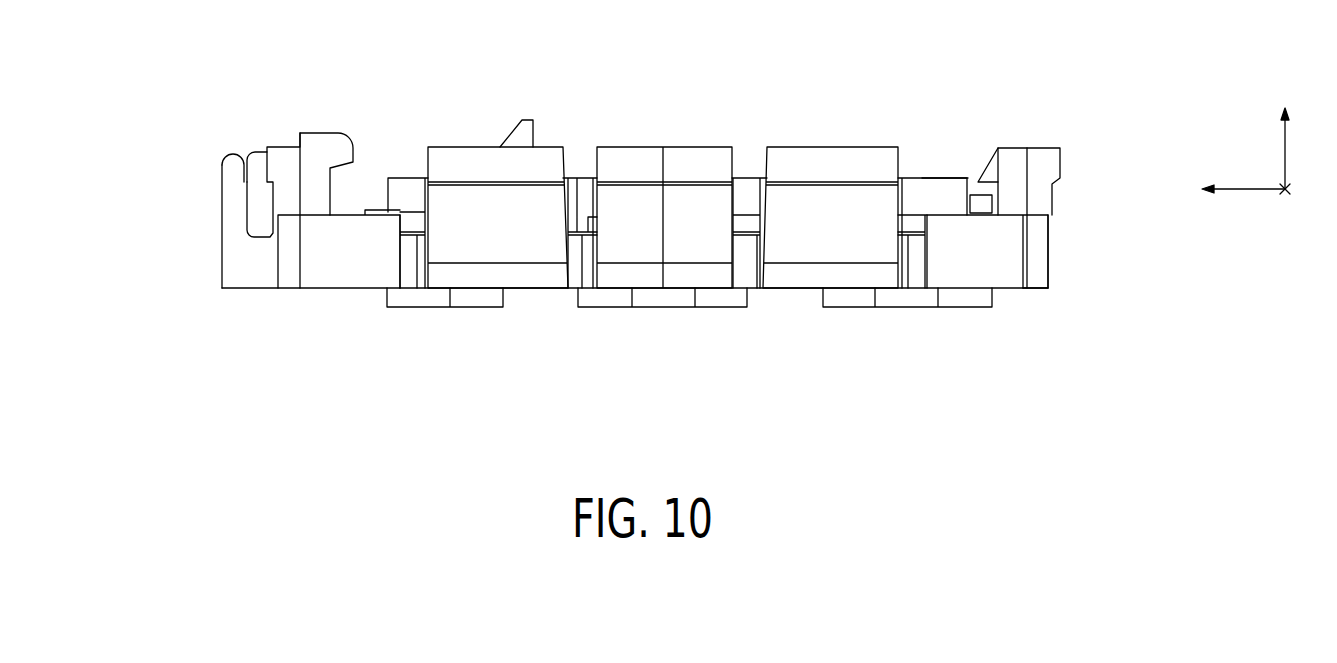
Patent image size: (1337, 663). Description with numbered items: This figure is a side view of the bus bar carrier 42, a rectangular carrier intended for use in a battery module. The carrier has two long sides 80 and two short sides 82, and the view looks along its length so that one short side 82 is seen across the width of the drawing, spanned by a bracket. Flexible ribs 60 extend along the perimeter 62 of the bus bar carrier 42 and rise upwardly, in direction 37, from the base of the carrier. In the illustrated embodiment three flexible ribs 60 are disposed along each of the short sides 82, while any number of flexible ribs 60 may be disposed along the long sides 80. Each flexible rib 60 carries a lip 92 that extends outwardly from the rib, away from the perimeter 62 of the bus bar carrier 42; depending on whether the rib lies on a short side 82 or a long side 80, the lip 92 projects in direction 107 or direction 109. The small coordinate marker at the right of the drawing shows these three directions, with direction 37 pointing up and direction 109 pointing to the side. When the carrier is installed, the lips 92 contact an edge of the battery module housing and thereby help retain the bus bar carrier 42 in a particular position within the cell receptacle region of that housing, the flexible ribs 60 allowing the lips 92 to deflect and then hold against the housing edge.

The direction 37 is at (1283, 152).
The bus bar carrier 42 is at (932, 64).
The flexible ribs 60 is at (828, 220).
The perimeter 62 is at (1037, 267).
The long sides 80 is at (200, 236).
The short sides 82 is at (190, 337).
The lip 92 is at (443, 160).
The direction 107 is at (1290, 189).
The direction 109 is at (1250, 188).